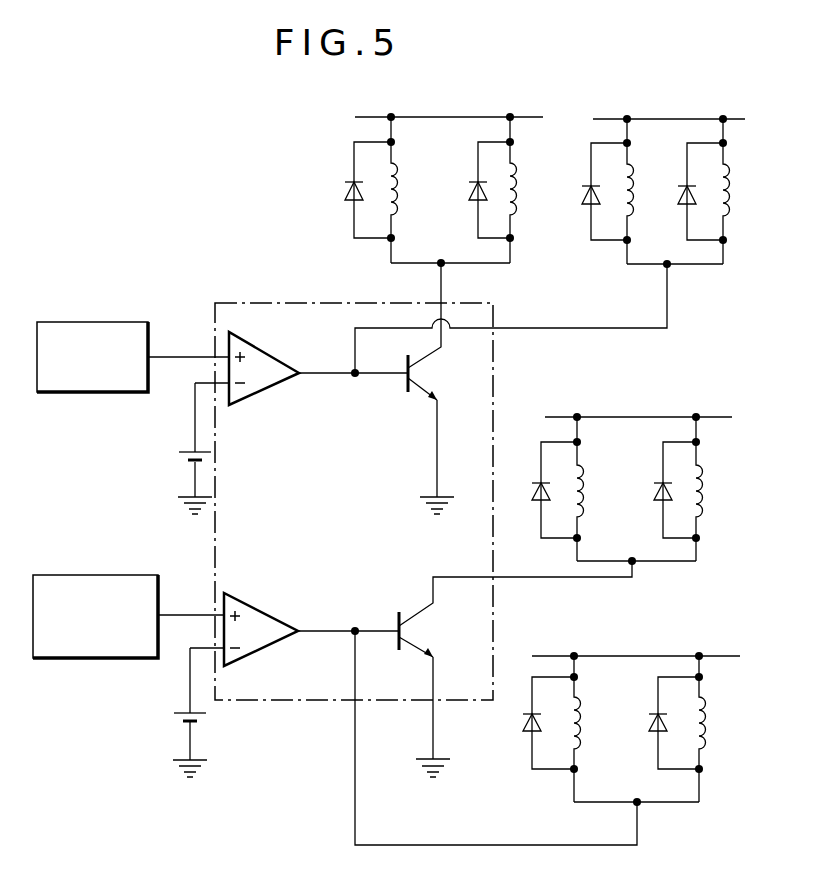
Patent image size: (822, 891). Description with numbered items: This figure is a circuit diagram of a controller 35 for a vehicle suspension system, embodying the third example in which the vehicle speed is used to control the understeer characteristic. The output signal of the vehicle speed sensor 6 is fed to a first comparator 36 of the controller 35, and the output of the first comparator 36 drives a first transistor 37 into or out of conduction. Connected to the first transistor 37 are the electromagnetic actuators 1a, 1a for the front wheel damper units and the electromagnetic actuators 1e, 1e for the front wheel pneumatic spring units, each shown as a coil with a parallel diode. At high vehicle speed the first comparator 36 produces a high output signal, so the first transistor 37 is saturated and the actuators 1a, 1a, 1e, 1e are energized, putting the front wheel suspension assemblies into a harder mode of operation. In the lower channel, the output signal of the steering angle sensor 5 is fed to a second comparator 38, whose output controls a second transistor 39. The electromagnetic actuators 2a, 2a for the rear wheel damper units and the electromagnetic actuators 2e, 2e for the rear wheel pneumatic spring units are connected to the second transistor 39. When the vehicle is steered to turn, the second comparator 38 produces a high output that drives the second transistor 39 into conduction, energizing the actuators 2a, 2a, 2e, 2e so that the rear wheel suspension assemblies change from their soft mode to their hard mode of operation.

The electromagnetic actuator for front wheel damper unit 1a is at (402, 181).
The electromagnetic actuator for front wheel pneumatic spring unit 1e is at (636, 208).
The electromagnetic actuator for rear wheel damper unit 2a is at (588, 486).
The electromagnetic actuator for rear wheel pneumatic spring unit 2e is at (584, 726).
The steering angle sensor 5 is at (143, 575).
The vehicle speed sensor 6 is at (140, 320).
The controller 35 is at (306, 303).
The first comparator 36 is at (277, 356).
The first transistor 37 is at (428, 381).
The second comparator 38 is at (283, 621).
The second transistor 39 is at (413, 612).